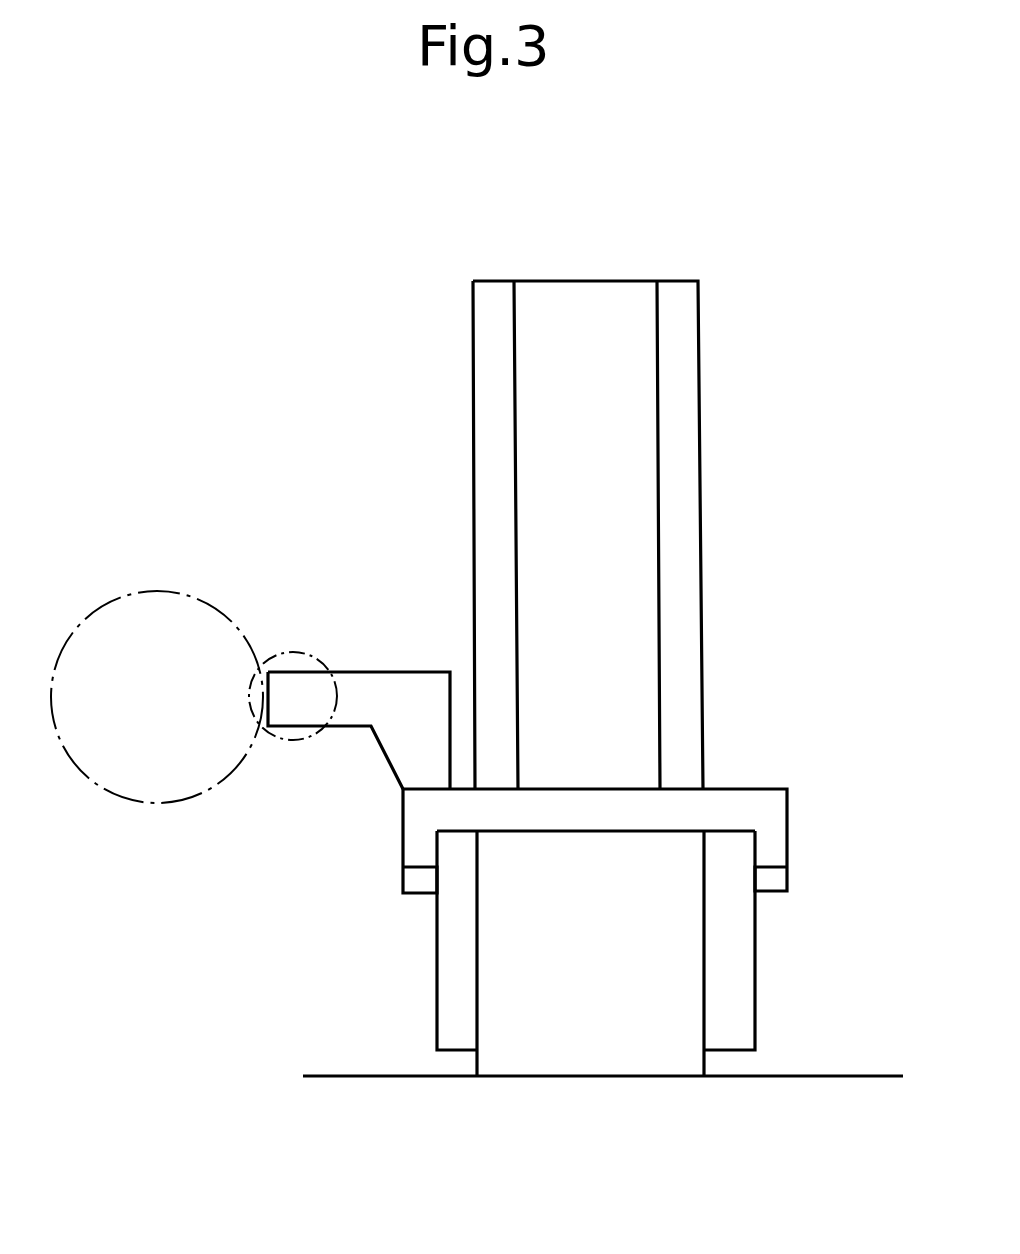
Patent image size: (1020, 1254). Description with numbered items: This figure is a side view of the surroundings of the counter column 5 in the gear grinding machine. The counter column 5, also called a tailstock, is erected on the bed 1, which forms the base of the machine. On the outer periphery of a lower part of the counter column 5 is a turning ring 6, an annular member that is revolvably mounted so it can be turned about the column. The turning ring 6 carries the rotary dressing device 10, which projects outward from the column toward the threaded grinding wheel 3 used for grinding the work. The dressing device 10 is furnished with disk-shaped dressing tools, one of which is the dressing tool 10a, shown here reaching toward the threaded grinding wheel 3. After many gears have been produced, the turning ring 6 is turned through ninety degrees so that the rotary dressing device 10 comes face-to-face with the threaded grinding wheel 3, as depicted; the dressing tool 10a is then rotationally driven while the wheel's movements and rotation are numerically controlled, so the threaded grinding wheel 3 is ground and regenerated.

The bed 1 is at (848, 1093).
The threaded grinding wheel 3 is at (151, 765).
The counter column 5 is at (733, 449).
The turning ring 6 is at (722, 788).
The rotary dressing device 10 is at (396, 648).
The dressing tool 10a is at (295, 657).